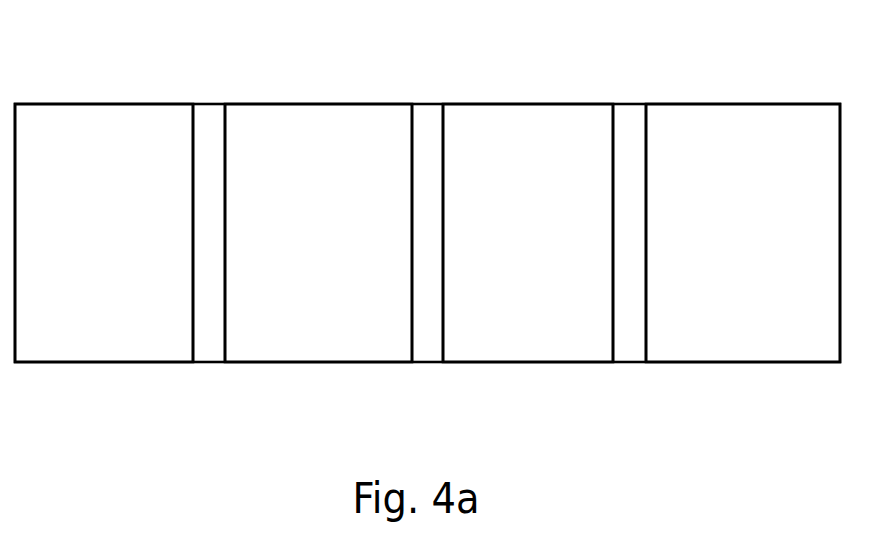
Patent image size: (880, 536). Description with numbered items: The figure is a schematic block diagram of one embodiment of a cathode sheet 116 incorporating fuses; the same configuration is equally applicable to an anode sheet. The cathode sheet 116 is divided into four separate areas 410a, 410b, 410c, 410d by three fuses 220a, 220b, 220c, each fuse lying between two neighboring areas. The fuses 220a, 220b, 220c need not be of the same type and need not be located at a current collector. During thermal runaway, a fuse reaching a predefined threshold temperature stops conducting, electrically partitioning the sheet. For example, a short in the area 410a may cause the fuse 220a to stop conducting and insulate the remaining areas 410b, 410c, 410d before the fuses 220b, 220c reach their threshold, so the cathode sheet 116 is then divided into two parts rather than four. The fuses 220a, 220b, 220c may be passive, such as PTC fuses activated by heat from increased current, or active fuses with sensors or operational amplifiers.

The cathode sheet 116 is at (97, 103).
The area 410a is at (132, 246).
The area 410b is at (359, 246).
The area 410c is at (553, 246).
The area 410d is at (766, 246).
The fuse 220a is at (209, 363).
The fuse 220b is at (428, 363).
The fuse 220c is at (628, 363).